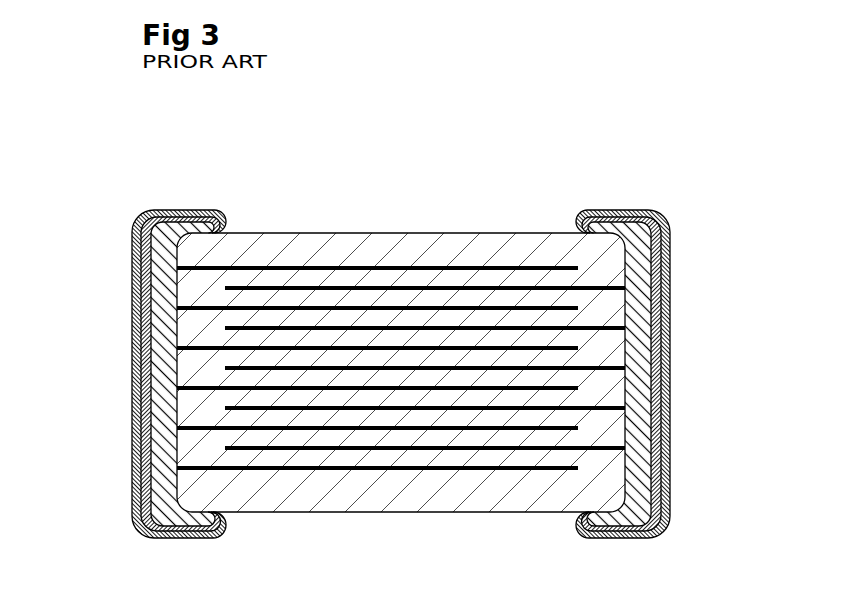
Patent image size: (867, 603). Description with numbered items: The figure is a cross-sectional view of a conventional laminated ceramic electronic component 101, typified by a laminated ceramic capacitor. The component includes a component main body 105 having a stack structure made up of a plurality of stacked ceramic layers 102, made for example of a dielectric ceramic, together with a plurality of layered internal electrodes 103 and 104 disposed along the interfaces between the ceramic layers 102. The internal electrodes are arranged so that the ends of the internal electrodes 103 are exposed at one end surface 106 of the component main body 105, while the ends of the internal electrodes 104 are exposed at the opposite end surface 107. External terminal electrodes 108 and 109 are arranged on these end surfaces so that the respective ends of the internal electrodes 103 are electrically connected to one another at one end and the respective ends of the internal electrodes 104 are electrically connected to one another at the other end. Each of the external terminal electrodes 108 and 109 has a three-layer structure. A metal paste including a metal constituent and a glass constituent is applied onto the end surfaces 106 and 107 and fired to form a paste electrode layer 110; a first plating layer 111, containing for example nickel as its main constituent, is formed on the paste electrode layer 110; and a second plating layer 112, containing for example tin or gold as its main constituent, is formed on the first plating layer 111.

The laminated ceramic electronic component 101 is at (243, 133).
The ceramic layers 102 is at (423, 295).
The internal electrodes 103 is at (345, 307).
The internal electrodes 104 is at (500, 328).
The component main body 105 is at (545, 233).
The end surface 106 is at (134, 397).
The end surface 107 is at (668, 394).
The external terminal electrode 108 is at (53, 262).
The external terminal electrode 109 is at (748, 237).
The paste electrode layer 110 is at (135, 271).
The first plating layer 111 is at (145, 305).
The second plating layer 112 is at (155, 339).